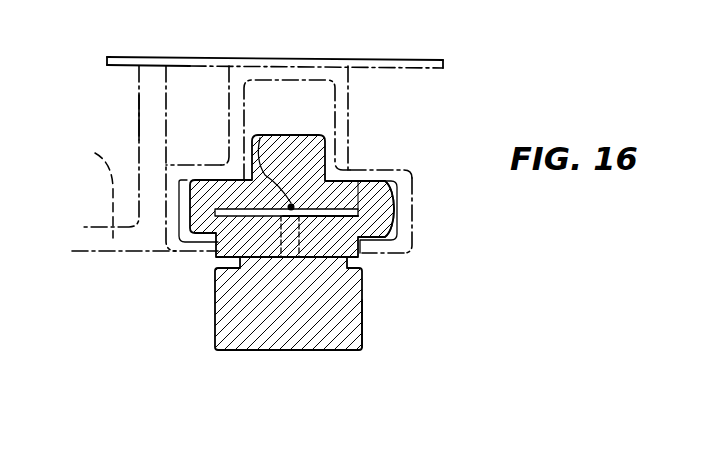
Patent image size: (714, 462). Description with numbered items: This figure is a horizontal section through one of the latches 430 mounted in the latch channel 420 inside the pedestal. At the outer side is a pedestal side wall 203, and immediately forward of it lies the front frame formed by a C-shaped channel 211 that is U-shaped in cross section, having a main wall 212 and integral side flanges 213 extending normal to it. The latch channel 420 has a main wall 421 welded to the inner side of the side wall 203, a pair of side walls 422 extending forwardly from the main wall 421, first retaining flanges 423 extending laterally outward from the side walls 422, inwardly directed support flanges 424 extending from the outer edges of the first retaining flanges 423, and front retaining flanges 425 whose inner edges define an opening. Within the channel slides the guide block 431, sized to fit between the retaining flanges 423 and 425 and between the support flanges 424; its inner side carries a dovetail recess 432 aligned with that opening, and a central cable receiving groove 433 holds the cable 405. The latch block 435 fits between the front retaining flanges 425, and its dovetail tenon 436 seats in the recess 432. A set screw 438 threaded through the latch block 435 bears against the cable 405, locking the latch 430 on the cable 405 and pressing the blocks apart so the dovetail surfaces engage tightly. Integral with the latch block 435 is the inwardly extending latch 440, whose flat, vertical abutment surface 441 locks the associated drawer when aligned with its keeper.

The side wall 203 is at (385, 58).
The C-shaped channel 211 is at (128, 112).
The main wall 212 is at (78, 190).
The side flange 213 is at (150, 87).
The cable 405 is at (288, 203).
The latch channel 420 is at (362, 107).
The main wall 421 is at (284, 80).
The side wall 422 is at (232, 99).
The first retaining flange 423 is at (200, 167).
The support flange 424 is at (162, 255).
The front retaining flange 425 is at (185, 256).
The latch 430 is at (315, 266).
The guide block 431 is at (362, 210).
The dovetail recess 432 is at (392, 195).
The cable receiving groove 433 is at (260, 138).
The latch block 435 is at (214, 262).
The tenon 436 is at (397, 226).
The set screw 438 is at (324, 165).
The latch 440 is at (290, 345).
The abutment surface 441 is at (363, 345).